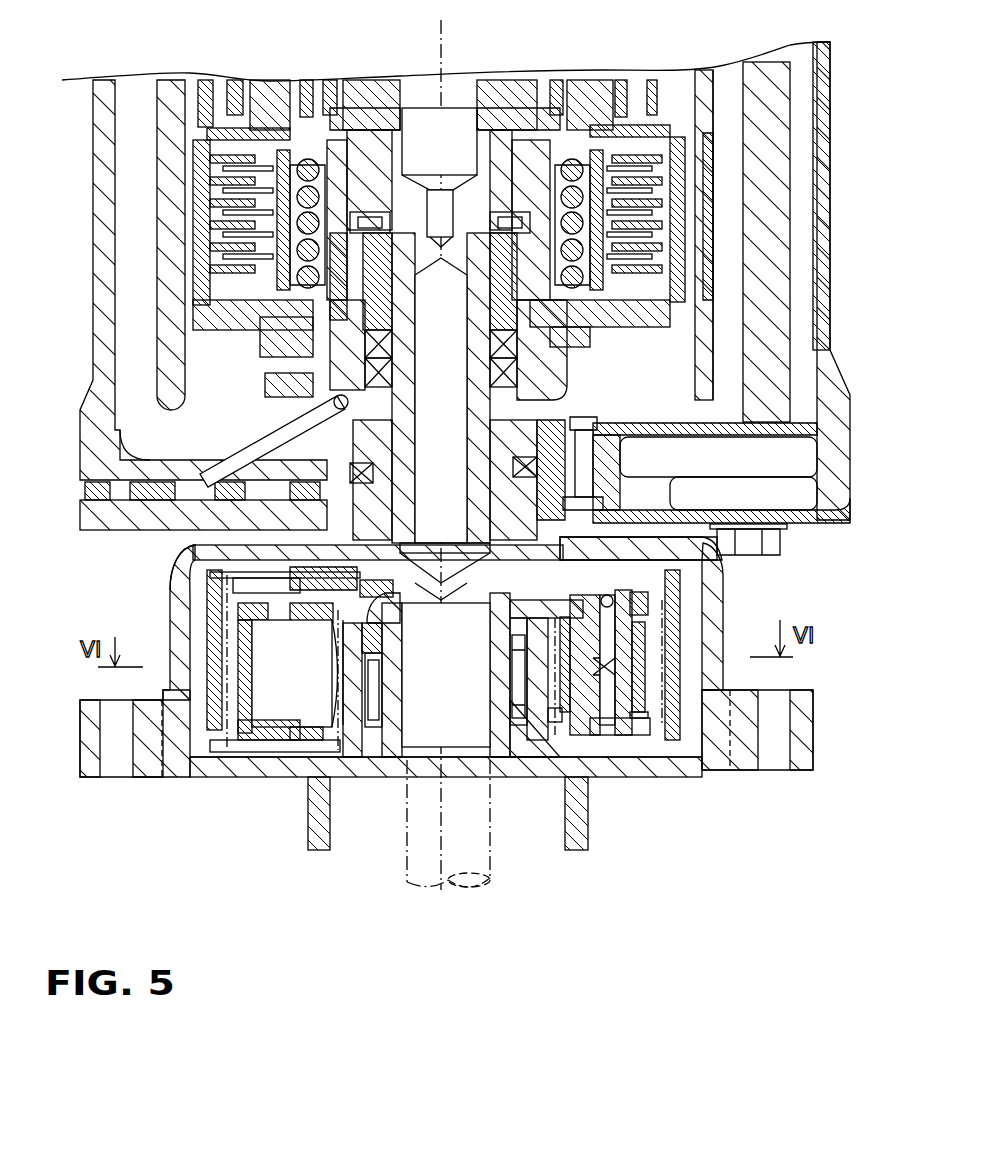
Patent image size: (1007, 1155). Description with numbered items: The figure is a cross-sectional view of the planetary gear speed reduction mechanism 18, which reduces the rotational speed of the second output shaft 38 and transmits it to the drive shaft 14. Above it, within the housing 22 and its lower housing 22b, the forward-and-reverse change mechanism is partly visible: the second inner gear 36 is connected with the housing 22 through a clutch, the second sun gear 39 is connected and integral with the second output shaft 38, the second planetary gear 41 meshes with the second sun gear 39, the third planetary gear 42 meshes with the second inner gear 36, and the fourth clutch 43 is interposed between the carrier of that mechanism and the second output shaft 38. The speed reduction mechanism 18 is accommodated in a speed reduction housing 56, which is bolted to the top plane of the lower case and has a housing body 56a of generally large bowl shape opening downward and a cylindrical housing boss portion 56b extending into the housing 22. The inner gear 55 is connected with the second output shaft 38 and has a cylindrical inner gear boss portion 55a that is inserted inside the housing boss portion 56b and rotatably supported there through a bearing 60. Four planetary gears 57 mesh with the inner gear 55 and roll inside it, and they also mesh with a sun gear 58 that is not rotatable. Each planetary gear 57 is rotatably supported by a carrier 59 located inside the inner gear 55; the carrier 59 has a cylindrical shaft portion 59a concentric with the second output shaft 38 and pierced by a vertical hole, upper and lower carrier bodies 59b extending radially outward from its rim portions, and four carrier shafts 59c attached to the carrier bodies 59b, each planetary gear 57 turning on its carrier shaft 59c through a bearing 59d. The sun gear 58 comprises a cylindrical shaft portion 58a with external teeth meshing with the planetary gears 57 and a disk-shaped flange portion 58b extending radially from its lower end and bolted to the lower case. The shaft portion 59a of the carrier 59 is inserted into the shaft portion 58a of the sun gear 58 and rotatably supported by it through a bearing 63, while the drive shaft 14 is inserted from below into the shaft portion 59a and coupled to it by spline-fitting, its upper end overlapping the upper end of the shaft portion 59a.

The drive shaft 14 is at (490, 843).
The planetary gear speed reduction mechanism 18 is at (815, 605).
The housing 22 is at (836, 68).
The lower housing 22b is at (828, 112).
The second inner gear 36 is at (215, 128).
The second output shaft 38 is at (510, 375).
The second sun gear 39 is at (350, 78).
The second planetary gear 41 is at (628, 75).
The third planetary gear 42 is at (300, 80).
The fourth clutch 43 is at (700, 150).
The inner gear 55 is at (705, 590).
The inner gear boss portion 55a is at (665, 492).
The speed reduction housing 56 is at (170, 595).
The housing body 56a is at (175, 570).
The housing boss portion 56b is at (592, 460).
The planetary gear 57 is at (665, 740).
The sun gear 58 is at (330, 688).
The shaft portion of the sun gear 58a is at (385, 662).
The flange portion 58b is at (275, 777).
The carrier 59 is at (690, 600).
The shaft portion of the carrier 59a is at (478, 700).
The carrier bodies 59b is at (245, 600).
The carrier shafts 59c is at (612, 725).
The bearing 59d is at (660, 620).
The bearing 60 is at (350, 460).
The bearing 63 is at (400, 705).